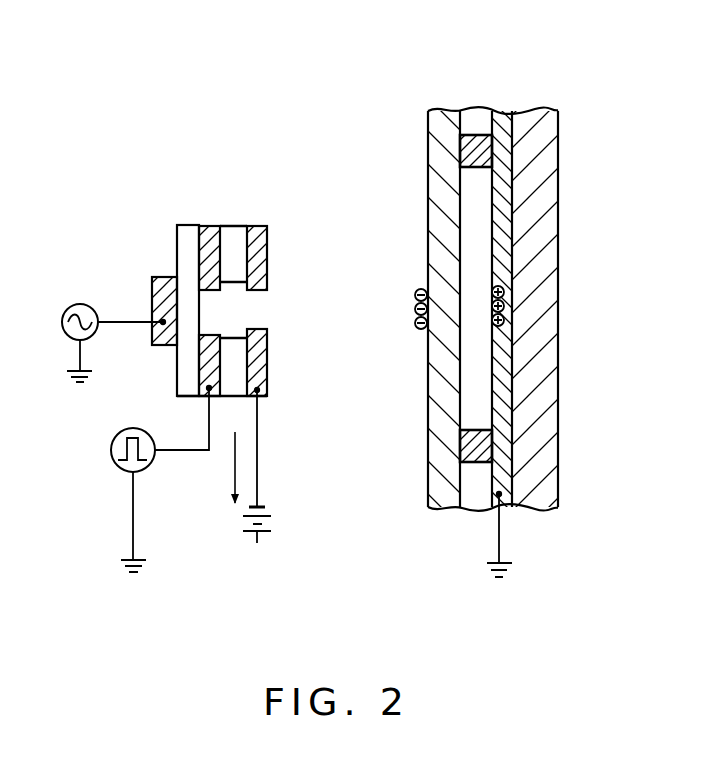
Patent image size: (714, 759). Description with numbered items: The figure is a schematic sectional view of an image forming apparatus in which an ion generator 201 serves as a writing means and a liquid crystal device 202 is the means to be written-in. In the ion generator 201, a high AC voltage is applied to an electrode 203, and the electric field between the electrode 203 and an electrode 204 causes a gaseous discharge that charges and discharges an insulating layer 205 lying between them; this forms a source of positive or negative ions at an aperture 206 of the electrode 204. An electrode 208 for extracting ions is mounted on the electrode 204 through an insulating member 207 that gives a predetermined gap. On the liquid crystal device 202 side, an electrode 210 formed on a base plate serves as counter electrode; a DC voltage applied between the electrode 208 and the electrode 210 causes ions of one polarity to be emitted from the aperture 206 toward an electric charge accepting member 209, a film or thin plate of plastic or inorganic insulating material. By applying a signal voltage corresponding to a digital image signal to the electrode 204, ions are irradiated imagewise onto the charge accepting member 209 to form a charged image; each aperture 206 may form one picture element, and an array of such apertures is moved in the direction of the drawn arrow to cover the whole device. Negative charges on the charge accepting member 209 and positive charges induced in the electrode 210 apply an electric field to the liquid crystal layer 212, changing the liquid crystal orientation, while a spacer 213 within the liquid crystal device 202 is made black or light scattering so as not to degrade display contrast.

The ion generator 201 is at (205, 369).
The liquid crystal device 202 is at (513, 307).
The electrode 203 is at (165, 277).
The electrode 204 is at (207, 235).
The insulating layer 205 is at (190, 238).
The aperture 206 is at (235, 310).
The insulating member 207 is at (233, 238).
The electrode for extracting ions 208 is at (262, 245).
The electric charge accepting member 209 is at (447, 488).
The electrode 210 is at (505, 113).
The liquid crystal layer 212 is at (478, 212).
The spacer 213 is at (540, 110).